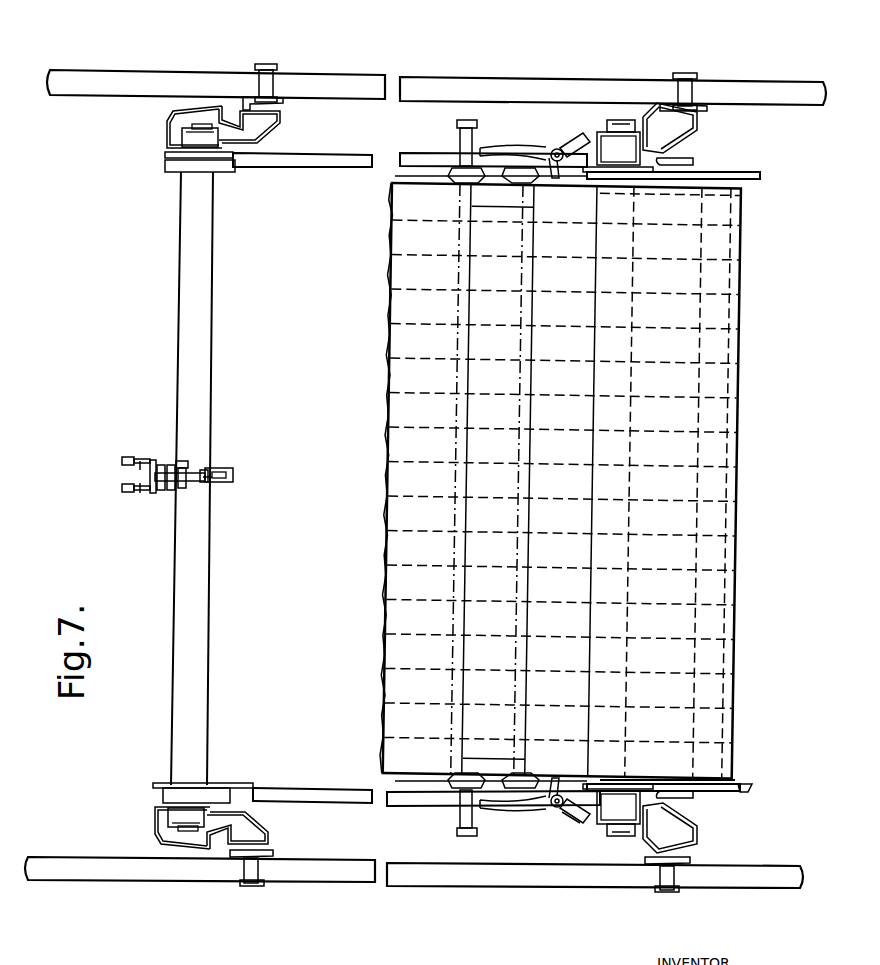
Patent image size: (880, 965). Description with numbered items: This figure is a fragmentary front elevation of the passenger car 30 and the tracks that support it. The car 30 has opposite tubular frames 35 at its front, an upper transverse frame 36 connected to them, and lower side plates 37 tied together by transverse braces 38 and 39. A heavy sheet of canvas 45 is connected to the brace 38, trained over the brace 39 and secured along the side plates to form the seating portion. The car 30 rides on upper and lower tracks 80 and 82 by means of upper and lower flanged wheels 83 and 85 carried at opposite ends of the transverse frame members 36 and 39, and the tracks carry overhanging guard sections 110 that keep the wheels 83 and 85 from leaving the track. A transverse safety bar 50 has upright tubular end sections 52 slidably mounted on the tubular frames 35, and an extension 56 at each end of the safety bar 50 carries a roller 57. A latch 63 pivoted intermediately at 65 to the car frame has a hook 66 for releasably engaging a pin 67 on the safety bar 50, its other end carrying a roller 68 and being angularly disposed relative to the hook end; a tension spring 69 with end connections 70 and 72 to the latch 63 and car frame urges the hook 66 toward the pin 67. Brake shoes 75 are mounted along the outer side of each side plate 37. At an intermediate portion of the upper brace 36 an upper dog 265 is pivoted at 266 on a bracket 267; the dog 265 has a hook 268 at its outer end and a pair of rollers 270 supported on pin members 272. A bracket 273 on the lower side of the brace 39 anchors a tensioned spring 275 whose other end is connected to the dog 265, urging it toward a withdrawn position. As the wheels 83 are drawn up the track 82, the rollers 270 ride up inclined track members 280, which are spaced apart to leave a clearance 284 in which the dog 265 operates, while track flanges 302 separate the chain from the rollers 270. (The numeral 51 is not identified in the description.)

The car 30 is at (727, 792).
The tubular frame 35 is at (323, 168).
The upper transverse frame 36 is at (205, 642).
The lower side plate 37 is at (746, 793).
The transverse brace 38 is at (742, 208).
The transverse brace 39 is at (598, 482).
The sheet of canvas 45 is at (710, 618).
The safety bar 50 is at (452, 482).
The lever 51 is at (504, 157).
The tubular end section 52 is at (512, 160).
The extension 56 is at (458, 143).
The roller 57 is at (503, 803).
The latch 63 is at (551, 152).
The pivot 65 is at (552, 801).
The hook 66 is at (520, 803).
The pin 67 is at (524, 810).
The roller 68 is at (583, 142).
The tension spring 69 is at (526, 792).
The end connection 70 is at (541, 806).
The end connection 72 is at (544, 797).
The brake shoe 75 is at (693, 157).
The upper track 80 is at (217, 125).
The lower track 82 is at (643, 130).
The upper flanged wheel 83 is at (195, 142).
The lower flanged wheel 85 is at (614, 146).
The guard section 110 is at (173, 137).
The upper dog 265 is at (205, 481).
The pivot 266 is at (160, 466).
The bracket 267 is at (170, 490).
The hook 268 is at (188, 481).
The roller 270 is at (185, 468).
The pin member 272 is at (180, 461).
The bracket 273 is at (228, 470).
The spring 275 is at (205, 472).
The inclined track member 280 is at (142, 458).
The clearance 284 is at (152, 493).
The track flange 302 is at (135, 490).